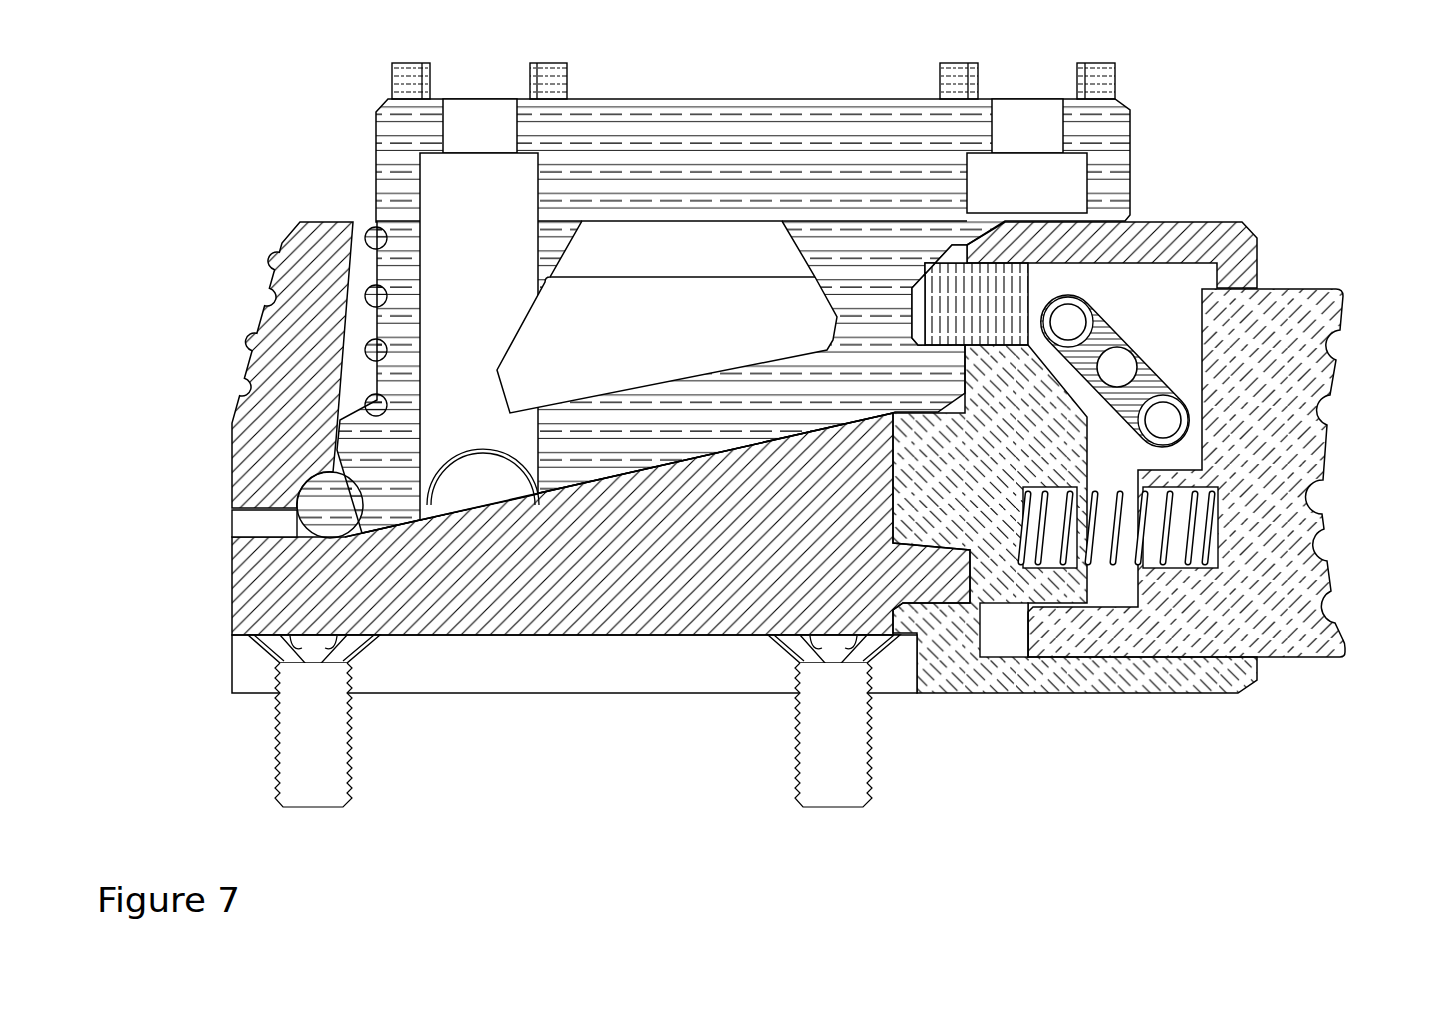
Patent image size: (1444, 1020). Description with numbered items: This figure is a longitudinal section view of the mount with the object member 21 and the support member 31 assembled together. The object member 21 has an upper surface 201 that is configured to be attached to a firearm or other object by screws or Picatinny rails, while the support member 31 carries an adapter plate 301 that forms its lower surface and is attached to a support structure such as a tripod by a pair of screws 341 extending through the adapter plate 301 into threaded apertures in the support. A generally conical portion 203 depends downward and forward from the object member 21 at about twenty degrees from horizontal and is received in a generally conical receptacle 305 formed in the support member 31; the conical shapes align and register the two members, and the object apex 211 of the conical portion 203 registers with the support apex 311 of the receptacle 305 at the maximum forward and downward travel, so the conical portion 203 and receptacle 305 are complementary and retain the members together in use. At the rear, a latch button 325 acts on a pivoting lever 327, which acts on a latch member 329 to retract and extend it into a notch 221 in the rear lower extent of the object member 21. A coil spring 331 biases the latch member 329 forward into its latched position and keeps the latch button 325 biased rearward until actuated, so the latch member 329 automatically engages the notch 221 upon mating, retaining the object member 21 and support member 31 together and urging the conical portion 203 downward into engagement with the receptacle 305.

The object member 21 is at (720, 397).
The support member 31 is at (833, 523).
The upper surface 201 is at (727, 98).
The generally conical portion 203 is at (387, 464).
The object apex 211 is at (313, 510).
The notch 221 is at (933, 263).
The adapter plate 301 is at (558, 672).
The generally conical receptacle 305 is at (688, 458).
The support apex 311 is at (312, 511).
The latch button 325 is at (1283, 490).
The pivoting lever 327 is at (1110, 320).
The latch member 329 is at (997, 295).
The coil spring 331 is at (1120, 530).
The screws 341 is at (322, 765).